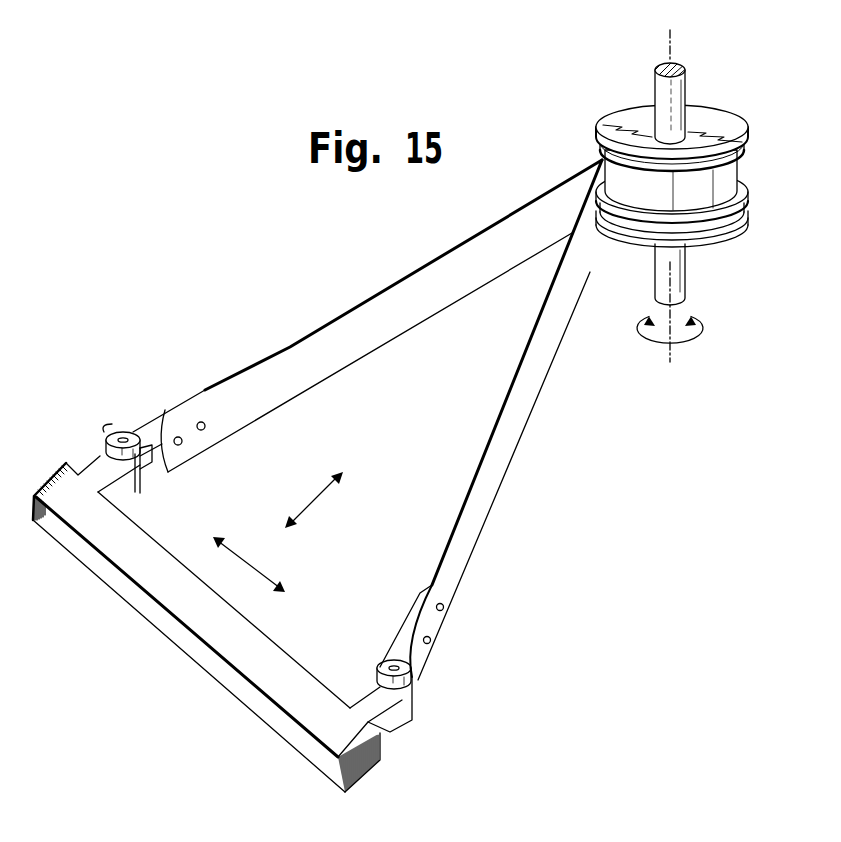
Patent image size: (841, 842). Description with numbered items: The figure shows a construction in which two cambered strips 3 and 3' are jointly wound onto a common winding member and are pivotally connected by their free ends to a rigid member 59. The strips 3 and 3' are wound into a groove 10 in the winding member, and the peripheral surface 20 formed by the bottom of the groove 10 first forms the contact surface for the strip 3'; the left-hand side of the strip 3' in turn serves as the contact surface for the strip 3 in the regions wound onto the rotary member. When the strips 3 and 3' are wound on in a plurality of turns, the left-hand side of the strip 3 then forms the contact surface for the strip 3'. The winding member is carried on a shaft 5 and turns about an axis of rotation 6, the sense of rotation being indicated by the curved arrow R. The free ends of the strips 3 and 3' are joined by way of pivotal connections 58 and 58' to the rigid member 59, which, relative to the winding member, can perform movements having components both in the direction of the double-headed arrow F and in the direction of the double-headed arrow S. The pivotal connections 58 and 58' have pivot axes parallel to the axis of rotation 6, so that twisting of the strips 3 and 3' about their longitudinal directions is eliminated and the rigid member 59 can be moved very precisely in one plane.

The cambered strip 3 is at (352, 316).
The cambered strip 3' is at (491, 420).
The shaft 5 is at (686, 96).
The axis of rotation 6 is at (672, 50).
The groove 10 is at (745, 181).
The peripheral surface 20 is at (728, 198).
The pivotal connection 58 is at (98, 432).
The pivotal connection 58' is at (422, 693).
The rigid member 59 is at (203, 623).
The double-headed arrow F is at (314, 500).
The double-headed arrow S is at (250, 565).
The rotation arrow R is at (690, 343).